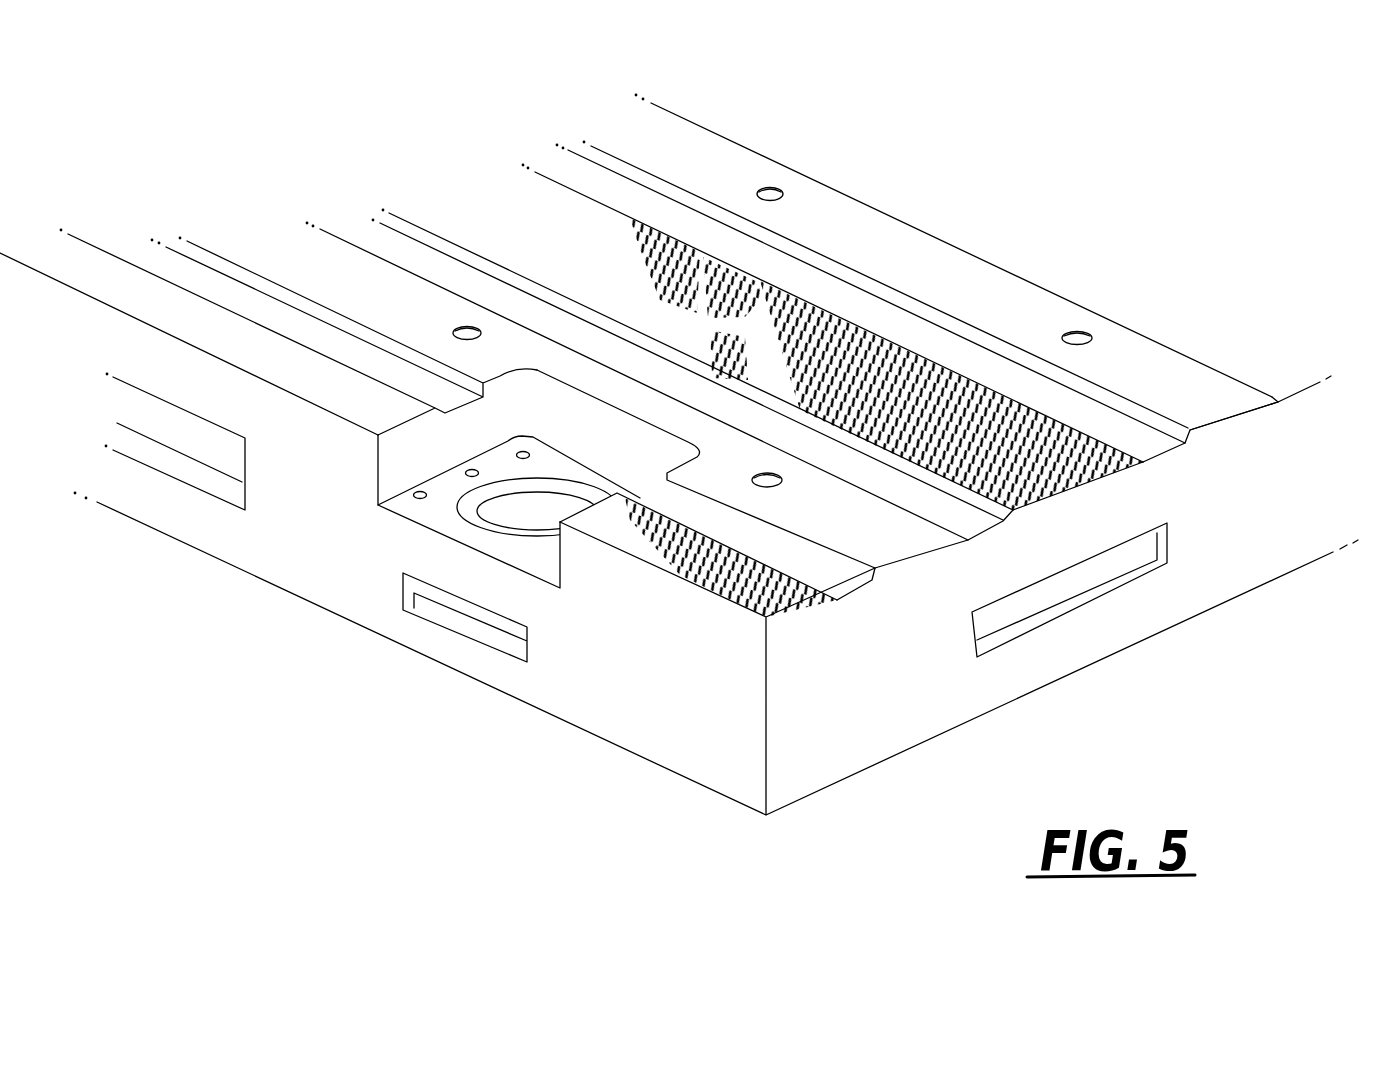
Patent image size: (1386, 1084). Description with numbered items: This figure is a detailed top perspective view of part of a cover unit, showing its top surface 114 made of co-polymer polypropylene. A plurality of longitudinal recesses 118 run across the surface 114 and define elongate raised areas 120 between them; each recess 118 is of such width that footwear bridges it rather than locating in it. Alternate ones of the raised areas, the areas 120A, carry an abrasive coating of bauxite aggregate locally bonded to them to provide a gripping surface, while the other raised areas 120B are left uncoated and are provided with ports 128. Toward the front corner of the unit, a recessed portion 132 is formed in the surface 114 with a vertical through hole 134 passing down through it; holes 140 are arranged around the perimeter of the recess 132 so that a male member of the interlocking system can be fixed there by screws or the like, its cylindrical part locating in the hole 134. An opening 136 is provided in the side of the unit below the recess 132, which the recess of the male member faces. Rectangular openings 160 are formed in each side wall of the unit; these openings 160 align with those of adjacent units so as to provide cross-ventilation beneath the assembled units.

The top surface 114 is at (679, 522).
The longitudinal recess 118 is at (985, 540).
The elongate raised area 120 is at (988, 287).
The abrasive-coated raised area 120A is at (1080, 480).
The uncoated raised area 120B is at (1208, 402).
The port 128 is at (787, 188).
The recessed portion 132 is at (420, 543).
The vertical through hole 134 is at (535, 518).
The opening 136 is at (513, 637).
The hole 140 is at (420, 498).
The rectangular opening 160 is at (1117, 567).